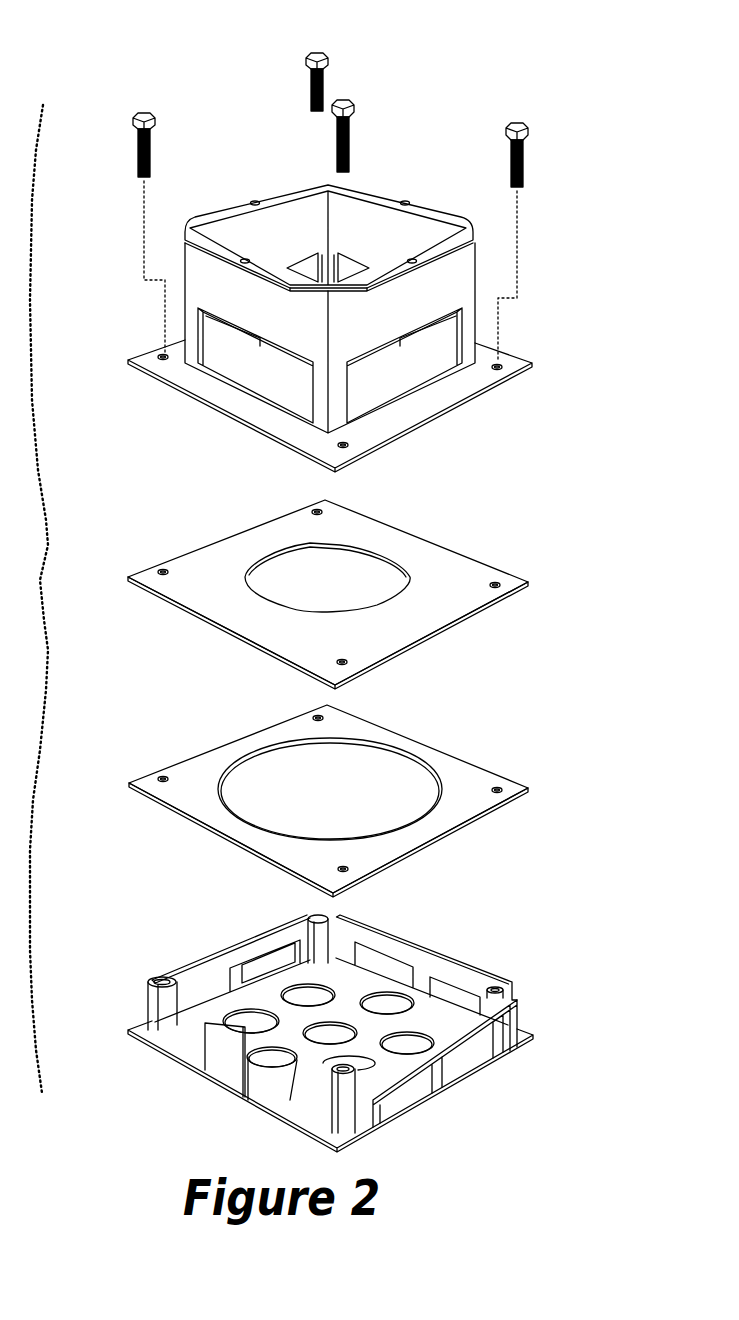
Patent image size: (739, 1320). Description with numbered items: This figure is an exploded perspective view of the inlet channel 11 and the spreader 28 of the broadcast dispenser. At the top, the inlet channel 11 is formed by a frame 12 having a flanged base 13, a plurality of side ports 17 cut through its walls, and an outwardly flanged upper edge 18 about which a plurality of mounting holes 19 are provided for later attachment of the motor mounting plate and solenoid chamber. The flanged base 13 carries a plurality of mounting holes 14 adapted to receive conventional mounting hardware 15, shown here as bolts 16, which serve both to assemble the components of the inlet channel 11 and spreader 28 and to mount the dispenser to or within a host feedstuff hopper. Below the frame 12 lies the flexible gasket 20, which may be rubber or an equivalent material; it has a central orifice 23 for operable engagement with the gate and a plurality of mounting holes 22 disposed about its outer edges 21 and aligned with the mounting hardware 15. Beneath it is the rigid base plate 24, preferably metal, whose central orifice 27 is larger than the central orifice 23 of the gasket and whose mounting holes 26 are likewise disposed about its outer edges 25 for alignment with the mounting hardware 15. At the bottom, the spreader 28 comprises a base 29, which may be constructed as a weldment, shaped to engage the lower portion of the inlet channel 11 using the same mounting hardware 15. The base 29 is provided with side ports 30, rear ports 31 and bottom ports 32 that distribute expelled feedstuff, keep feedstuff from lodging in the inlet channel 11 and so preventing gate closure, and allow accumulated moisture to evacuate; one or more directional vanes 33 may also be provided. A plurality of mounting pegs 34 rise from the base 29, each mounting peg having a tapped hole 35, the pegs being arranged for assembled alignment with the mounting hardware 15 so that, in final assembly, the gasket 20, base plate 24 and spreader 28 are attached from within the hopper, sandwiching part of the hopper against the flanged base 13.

The inlet channel 11 is at (553, 510).
The frame 12 is at (245, 403).
The flanged base 13 is at (316, 305).
The mounting holes 14 is at (503, 365).
The mounting hardware 15 is at (135, 150).
The bolts 16 is at (325, 80).
The side ports 17 is at (243, 366).
The outwardly flanged upper edge 18 is at (280, 197).
The mounting holes 19 is at (422, 240).
The flexible gasket 20 is at (352, 593).
The outer edges 21 is at (243, 627).
The mounting holes 22 is at (163, 570).
The central orifice 23 is at (340, 568).
The rigid base plate 24 is at (330, 801).
The outer edges 25 is at (177, 798).
The mounting holes 26 is at (163, 778).
The central orifice 27 is at (313, 797).
The spreader 28 is at (350, 1017).
The base 29 is at (180, 1045).
The side ports 30 is at (205, 988).
The rear ports 31 is at (385, 970).
The bottom ports 32 is at (407, 1042).
The directional vanes 33 is at (227, 1053).
The mounting pegs 34 is at (308, 932).
The tapped hole 35 is at (498, 988).